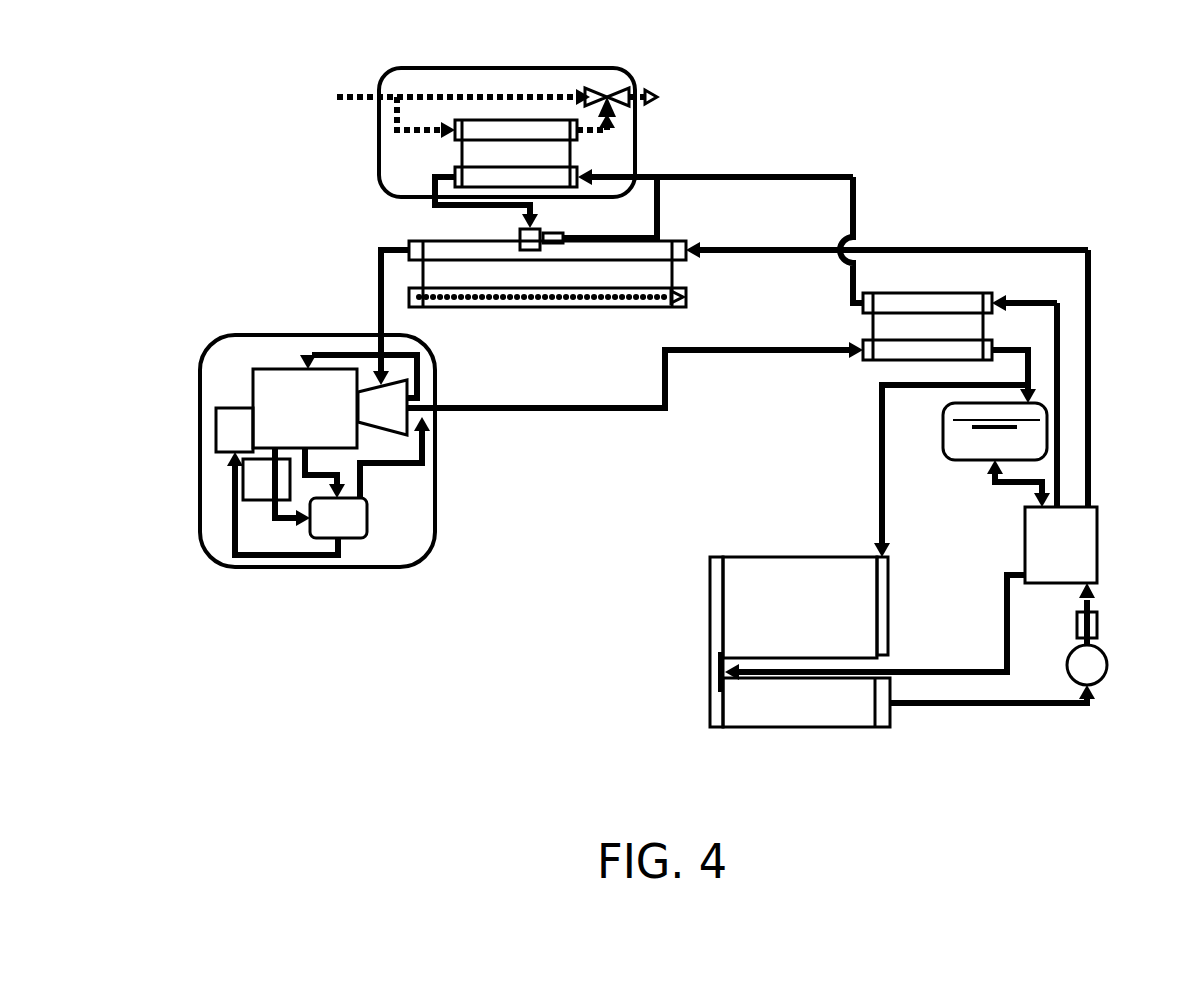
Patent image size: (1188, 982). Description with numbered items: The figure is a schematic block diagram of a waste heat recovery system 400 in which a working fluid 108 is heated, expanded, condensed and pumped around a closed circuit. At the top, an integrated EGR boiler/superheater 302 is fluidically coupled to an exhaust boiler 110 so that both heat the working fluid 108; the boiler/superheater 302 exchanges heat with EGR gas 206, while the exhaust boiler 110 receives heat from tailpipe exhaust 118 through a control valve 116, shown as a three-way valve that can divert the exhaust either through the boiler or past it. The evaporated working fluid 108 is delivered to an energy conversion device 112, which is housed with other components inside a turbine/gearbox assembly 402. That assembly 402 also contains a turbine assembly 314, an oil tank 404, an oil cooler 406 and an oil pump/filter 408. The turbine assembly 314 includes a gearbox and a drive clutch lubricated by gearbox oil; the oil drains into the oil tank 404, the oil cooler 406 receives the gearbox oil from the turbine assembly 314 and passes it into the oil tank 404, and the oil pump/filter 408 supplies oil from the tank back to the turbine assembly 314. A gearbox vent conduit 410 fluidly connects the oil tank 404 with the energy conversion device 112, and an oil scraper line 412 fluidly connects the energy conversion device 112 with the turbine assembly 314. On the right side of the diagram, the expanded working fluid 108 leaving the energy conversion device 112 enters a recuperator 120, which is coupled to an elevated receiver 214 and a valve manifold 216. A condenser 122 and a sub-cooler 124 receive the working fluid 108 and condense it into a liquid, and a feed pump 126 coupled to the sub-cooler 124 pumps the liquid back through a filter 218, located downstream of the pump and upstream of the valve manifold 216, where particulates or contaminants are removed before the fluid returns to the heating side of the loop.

The working fluid 108 is at (434, 205).
The exhaust boiler 110 is at (462, 154).
The energy conversion device 112 is at (388, 432).
The control valve 116 is at (607, 96).
The tailpipe exhaust 118 is at (372, 96).
The recuperator 120 is at (880, 362).
The condenser 122 is at (750, 557).
The sub-cooler 124 is at (750, 727).
The feed pump 126 is at (1107, 673).
The EGR gas 206 is at (594, 299).
The elevated receiver 214 is at (978, 460).
The valve manifold 216 is at (1097, 545).
The filter 218 is at (1097, 628).
The integrated EGR boiler/superheater 302 is at (503, 306).
The turbine assembly 314 is at (253, 372).
The waste heat recovery system 400 is at (1040, 207).
The turbine/gearbox assembly 402 is at (333, 336).
The oil tank 404 is at (356, 540).
The oil cooler 406 is at (262, 500).
The oil pump/filter 408 is at (216, 425).
The gearbox vent conduit 410 is at (400, 466).
The oil scraper line 412 is at (420, 360).